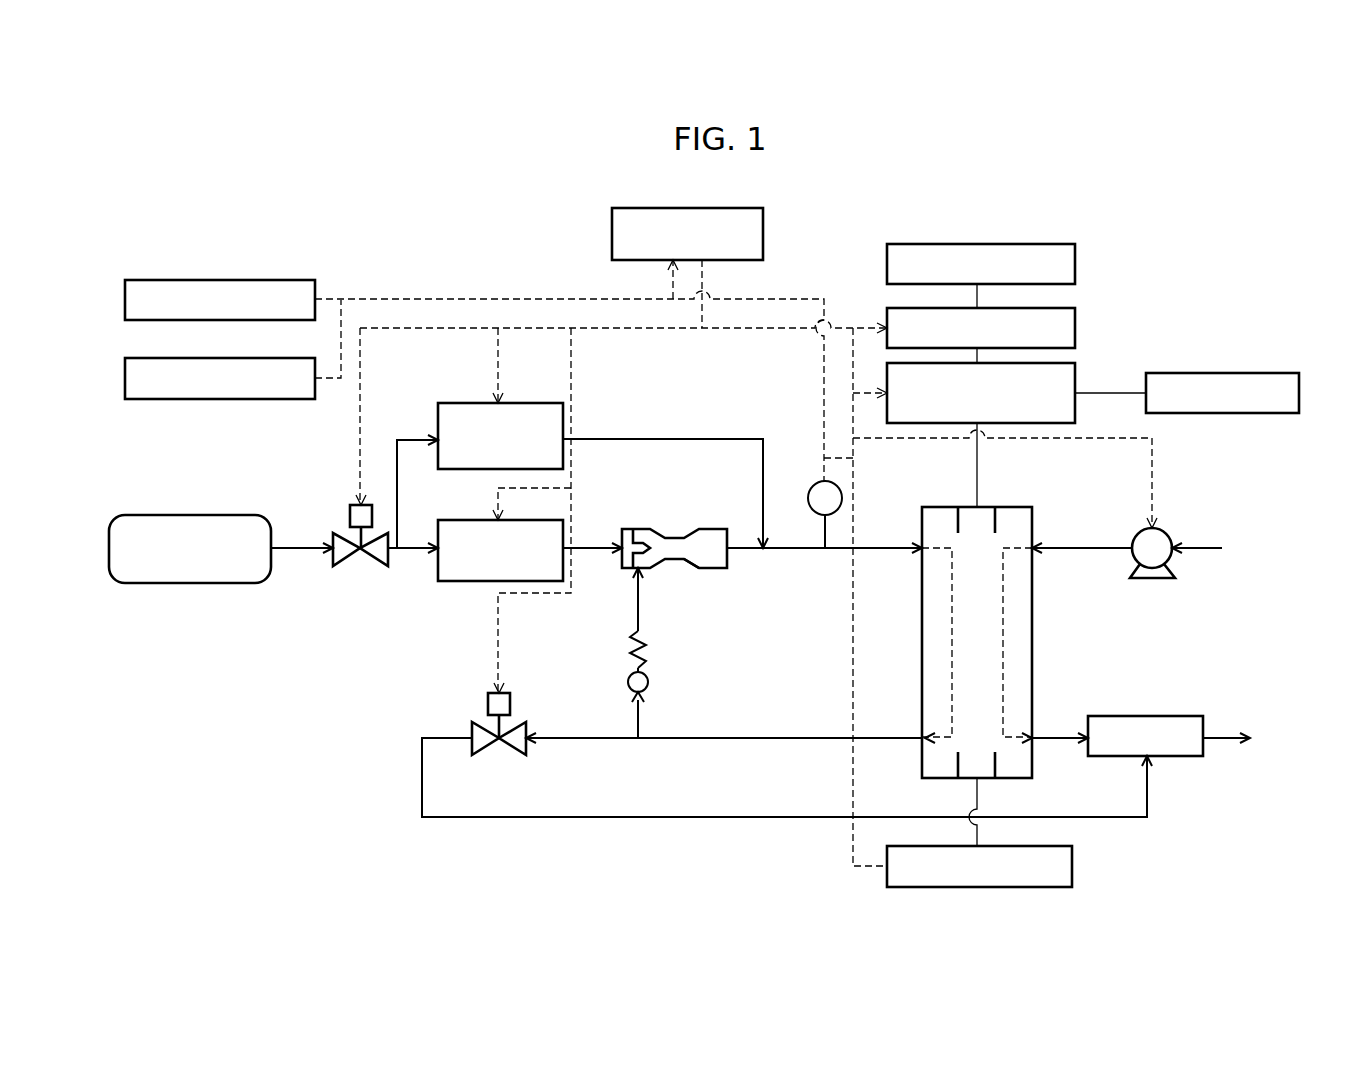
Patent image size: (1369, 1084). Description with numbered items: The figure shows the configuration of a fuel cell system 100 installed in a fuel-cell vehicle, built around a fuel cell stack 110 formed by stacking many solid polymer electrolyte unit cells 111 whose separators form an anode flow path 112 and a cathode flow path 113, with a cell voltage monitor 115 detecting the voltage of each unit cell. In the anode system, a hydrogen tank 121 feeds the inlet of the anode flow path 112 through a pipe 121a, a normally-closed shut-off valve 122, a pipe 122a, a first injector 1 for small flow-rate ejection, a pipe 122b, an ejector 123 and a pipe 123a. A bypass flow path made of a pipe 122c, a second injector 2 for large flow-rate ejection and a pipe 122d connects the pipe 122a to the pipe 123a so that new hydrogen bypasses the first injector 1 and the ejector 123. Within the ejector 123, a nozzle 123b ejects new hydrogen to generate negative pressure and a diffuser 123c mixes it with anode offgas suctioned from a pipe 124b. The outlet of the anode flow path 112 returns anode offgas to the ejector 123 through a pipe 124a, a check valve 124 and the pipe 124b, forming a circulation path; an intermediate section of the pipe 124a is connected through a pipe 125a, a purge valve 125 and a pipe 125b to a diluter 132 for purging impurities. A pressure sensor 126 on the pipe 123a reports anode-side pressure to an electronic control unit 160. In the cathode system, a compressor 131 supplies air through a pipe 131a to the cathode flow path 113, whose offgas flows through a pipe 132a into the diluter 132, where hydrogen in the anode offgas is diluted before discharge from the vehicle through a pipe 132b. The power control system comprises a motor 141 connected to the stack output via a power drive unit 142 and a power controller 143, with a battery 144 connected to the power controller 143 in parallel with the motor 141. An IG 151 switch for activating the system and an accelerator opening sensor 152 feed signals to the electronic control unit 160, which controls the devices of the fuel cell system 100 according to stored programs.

The fuel cell system 100 is at (448, 246).
The electronic control unit 160 is at (763, 237).
The IG 151 is at (125, 301).
The accelerator opening sensor 152 is at (125, 380).
The motor 141 is at (1075, 264).
The power drive unit 142 is at (1075, 330).
The power controller 143 is at (1075, 371).
The battery 144 is at (1299, 396).
The second injector 2 is at (448, 406).
The first injector 1 is at (448, 523).
The hydrogen tank 121 is at (190, 515).
The pipe 121a is at (300, 550).
The shut-off valve 122 is at (361, 563).
The pipe 122a is at (407, 551).
The pipe 122b is at (597, 551).
The pipe 122c is at (418, 436).
The pipe 122d is at (660, 438).
The ejector 123 is at (706, 529).
The pipe 123a is at (795, 551).
The nozzle 123b is at (630, 531).
The diffuser 123c is at (705, 570).
The pressure sensor 126 is at (812, 487).
The fuel cell stack 110 is at (1040, 528).
The unit cells 111 is at (944, 510).
The anode flow path 112 is at (935, 659).
The cathode flow path 113 is at (1010, 659).
The check valve 124 is at (648, 684).
The pipe 124a is at (788, 740).
The pipe 124b is at (636, 609).
The purge valve 125 is at (502, 755).
The pipe 125a is at (600, 740).
The pipe 125b is at (705, 818).
The compressor 131 is at (1168, 530).
The pipe 131a is at (1080, 551).
The diluter 132 is at (1120, 716).
The pipe 132a is at (1053, 740).
The pipe 132b is at (1223, 740).
The cell voltage monitor 115 is at (1072, 869).